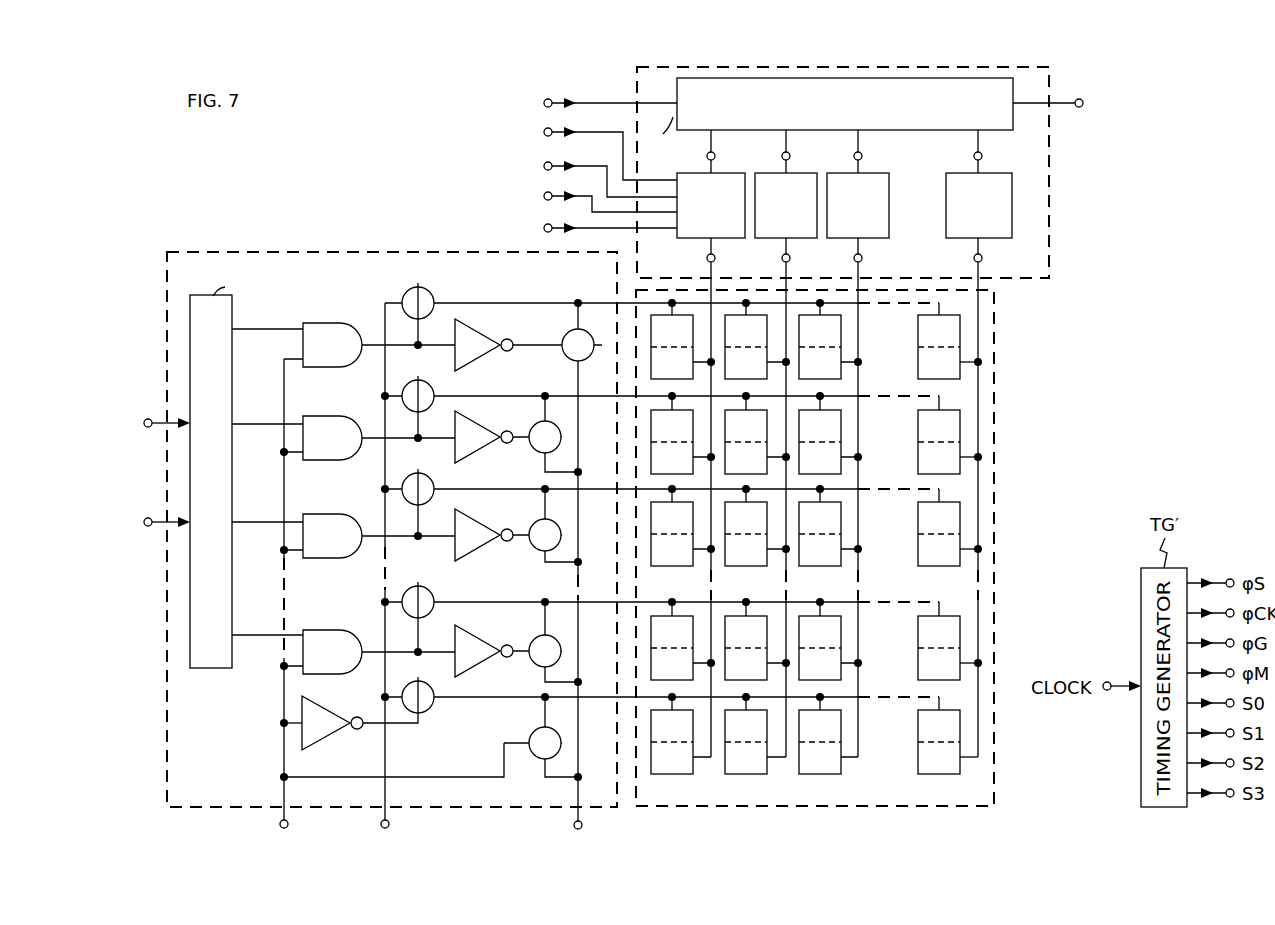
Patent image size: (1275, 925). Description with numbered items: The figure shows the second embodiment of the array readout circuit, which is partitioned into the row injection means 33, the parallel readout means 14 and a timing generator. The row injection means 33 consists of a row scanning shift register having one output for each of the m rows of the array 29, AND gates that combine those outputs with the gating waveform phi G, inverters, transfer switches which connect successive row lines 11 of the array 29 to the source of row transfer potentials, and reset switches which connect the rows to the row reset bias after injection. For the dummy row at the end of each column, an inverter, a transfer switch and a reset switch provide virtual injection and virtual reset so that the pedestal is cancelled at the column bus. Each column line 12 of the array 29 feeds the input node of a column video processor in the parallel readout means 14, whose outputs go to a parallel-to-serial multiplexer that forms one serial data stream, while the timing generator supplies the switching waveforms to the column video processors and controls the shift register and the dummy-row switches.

The row line 11 is at (882, 308).
The column line 12 is at (715, 582).
The parallel readout means 14 is at (1050, 216).
The array 29 is at (997, 413).
The row injection means 33 is at (319, 251).